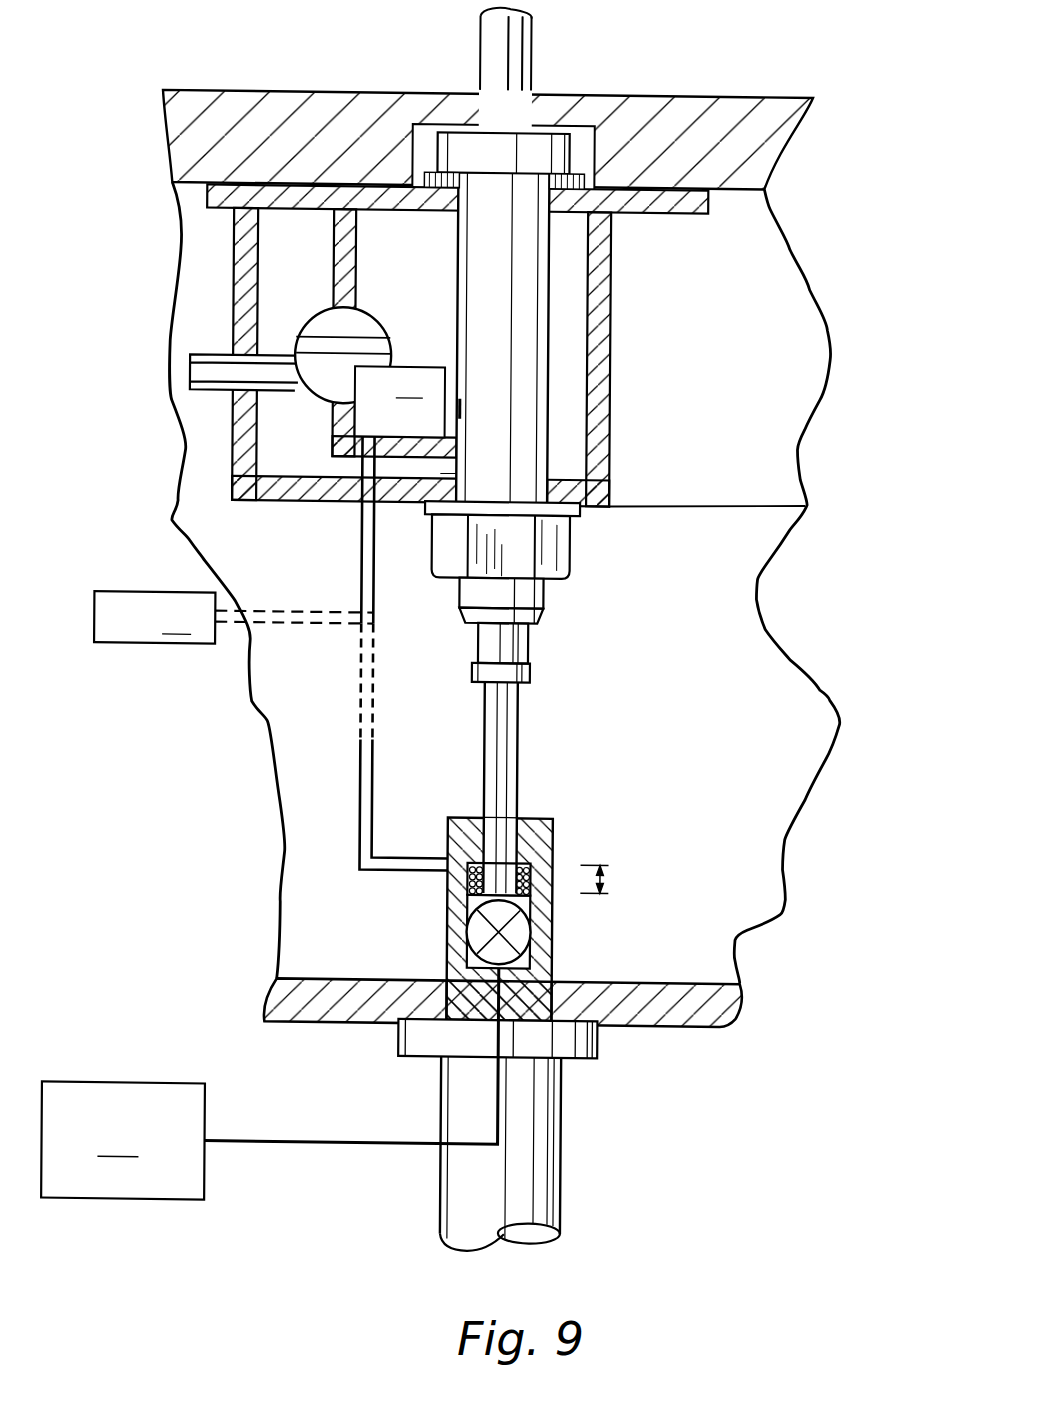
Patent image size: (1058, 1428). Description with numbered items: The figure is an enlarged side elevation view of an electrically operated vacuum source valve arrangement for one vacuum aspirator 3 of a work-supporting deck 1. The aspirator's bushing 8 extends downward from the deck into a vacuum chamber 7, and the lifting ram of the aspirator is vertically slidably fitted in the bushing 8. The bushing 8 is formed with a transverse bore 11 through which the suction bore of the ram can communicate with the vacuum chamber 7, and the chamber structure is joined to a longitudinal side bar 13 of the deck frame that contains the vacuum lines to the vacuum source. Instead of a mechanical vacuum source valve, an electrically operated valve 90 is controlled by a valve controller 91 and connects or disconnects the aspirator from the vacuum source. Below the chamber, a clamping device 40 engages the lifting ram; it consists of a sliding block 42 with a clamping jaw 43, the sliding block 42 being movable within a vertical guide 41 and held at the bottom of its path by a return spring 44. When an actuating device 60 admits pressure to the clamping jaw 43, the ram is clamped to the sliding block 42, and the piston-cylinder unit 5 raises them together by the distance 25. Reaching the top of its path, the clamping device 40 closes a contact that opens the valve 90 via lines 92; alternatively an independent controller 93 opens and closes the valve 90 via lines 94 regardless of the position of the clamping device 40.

The work-supporting deck 1 is at (707, 116).
The vacuum aspirator 3 is at (232, 296).
The piston-cylinder unit 5 is at (488, 1158).
The vacuum chamber 7 is at (312, 298).
The bushing 8 is at (527, 289).
The transverse bore 11 is at (462, 403).
The longitudinal side bar 13 is at (765, 298).
The distance 25 is at (612, 874).
The clamping device 40 is at (576, 963).
The vertical guide 41 is at (531, 866).
The sliding block 42 is at (539, 935).
The clamping jaw 43 is at (523, 921).
The return spring 44 is at (529, 876).
The actuating device 60 is at (270, 1082).
The electrically operated valve 90 is at (343, 355).
The valve controller 91 is at (400, 401).
The lines 92 is at (376, 715).
The independent controller 93 is at (154, 617).
The lines 94 is at (322, 610).